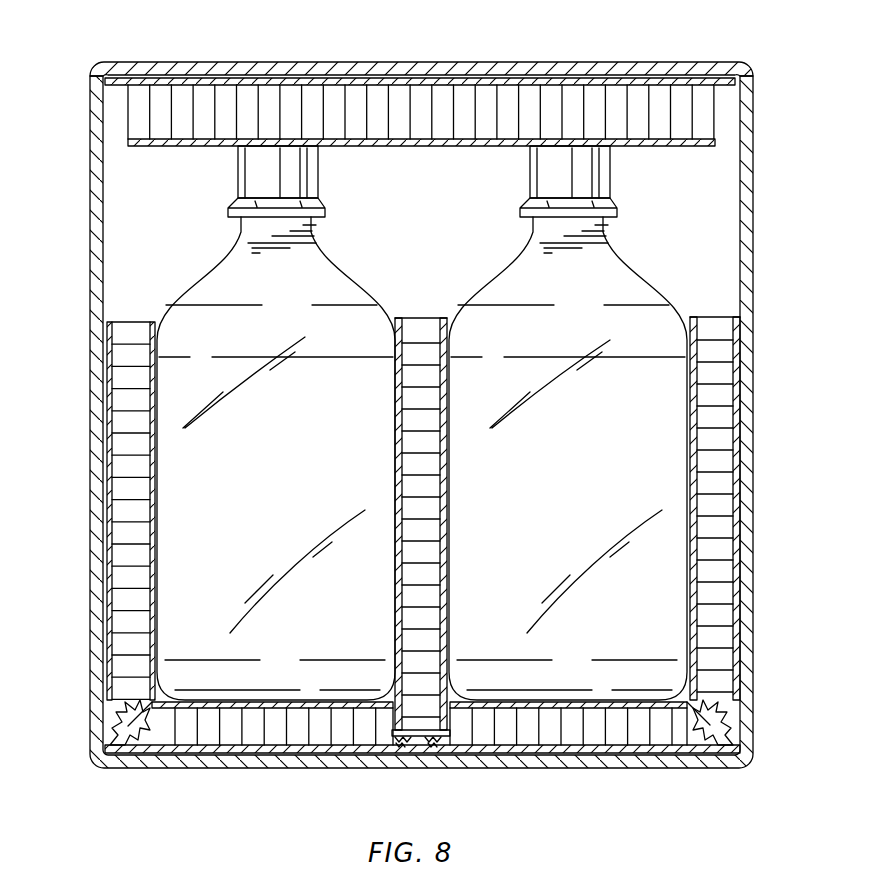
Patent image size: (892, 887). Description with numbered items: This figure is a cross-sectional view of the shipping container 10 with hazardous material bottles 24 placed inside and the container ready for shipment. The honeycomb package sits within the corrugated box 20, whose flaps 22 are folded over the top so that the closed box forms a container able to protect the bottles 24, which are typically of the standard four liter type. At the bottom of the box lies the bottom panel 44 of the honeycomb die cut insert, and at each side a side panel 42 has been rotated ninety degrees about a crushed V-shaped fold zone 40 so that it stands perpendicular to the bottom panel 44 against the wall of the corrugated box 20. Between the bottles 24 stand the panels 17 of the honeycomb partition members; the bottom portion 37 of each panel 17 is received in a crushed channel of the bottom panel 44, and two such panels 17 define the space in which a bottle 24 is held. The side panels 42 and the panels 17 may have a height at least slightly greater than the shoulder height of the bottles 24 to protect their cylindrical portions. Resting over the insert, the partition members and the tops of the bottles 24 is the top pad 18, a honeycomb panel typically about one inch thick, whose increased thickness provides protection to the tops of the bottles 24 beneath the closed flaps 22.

The shipping container 10 is at (79, 145).
The panel 17 is at (130, 358).
The top pad 18 is at (682, 112).
The corrugated box 20 is at (760, 523).
The flaps 22 is at (667, 72).
The hazardous material bottles 24 is at (620, 278).
The bottom portion 37 is at (403, 742).
The V-shaped fold zone 40 is at (701, 745).
The side panel 42 is at (616, 727).
The bottom panel 44 is at (228, 728).